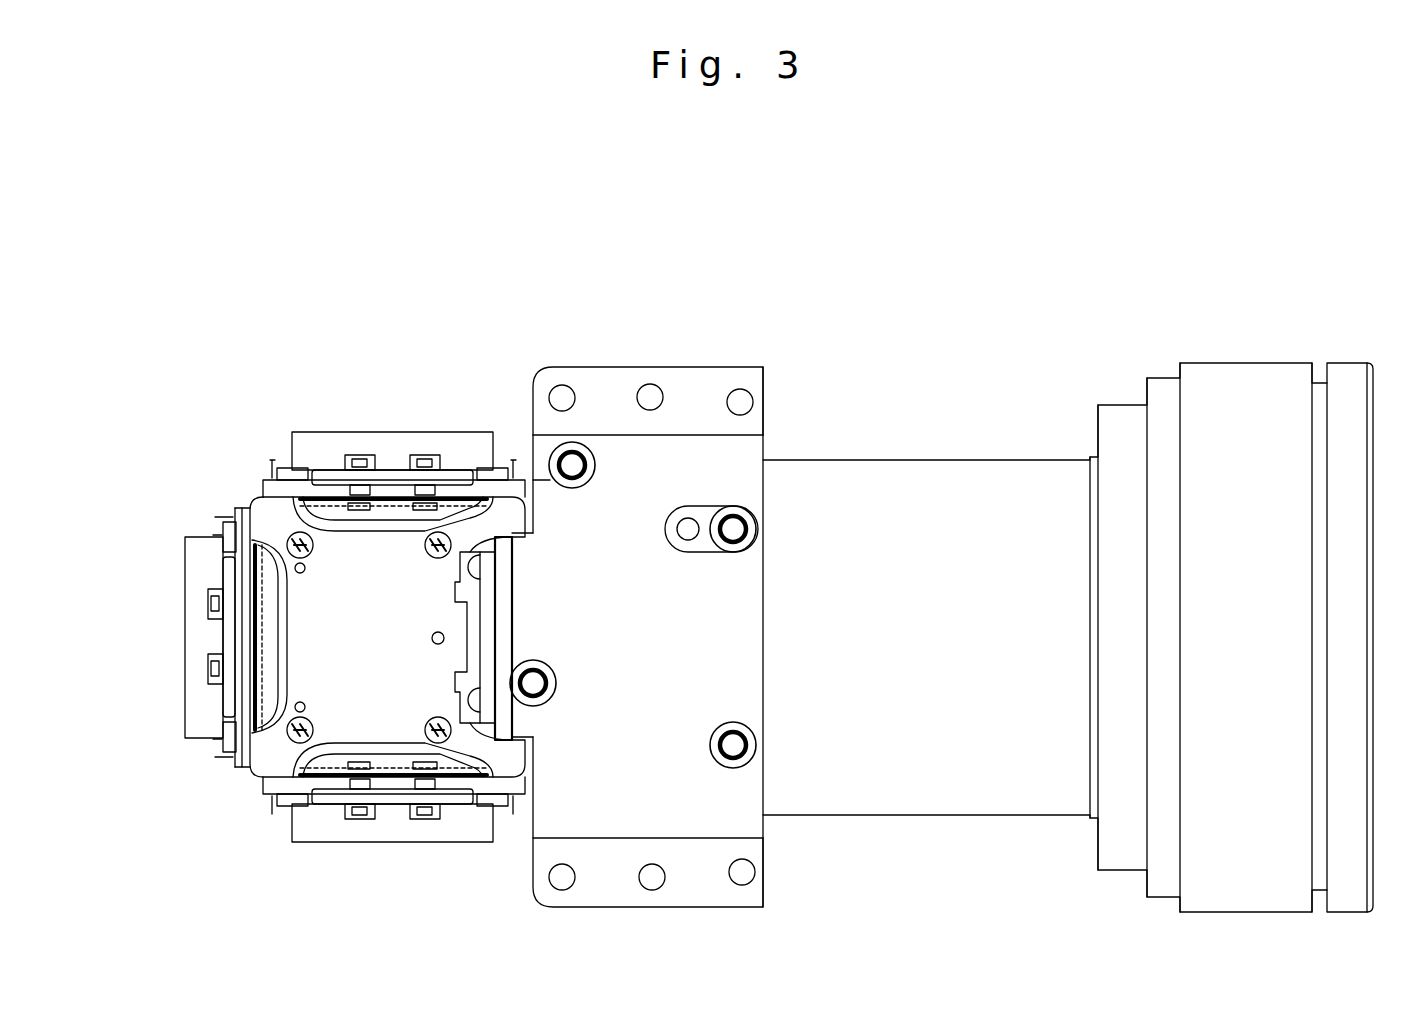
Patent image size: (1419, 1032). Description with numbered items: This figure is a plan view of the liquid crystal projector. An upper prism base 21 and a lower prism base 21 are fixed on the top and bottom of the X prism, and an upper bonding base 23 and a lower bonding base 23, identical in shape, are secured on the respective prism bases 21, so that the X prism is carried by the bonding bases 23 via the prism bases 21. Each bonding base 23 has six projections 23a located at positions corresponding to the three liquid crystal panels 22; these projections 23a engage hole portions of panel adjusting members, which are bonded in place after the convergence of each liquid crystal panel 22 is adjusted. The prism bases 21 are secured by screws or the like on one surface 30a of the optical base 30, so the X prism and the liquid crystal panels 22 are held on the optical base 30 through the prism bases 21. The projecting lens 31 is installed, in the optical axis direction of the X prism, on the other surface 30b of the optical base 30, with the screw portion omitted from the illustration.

The prism base 21 is at (342, 755).
The liquid crystal panel 22 is at (385, 440).
The bonding base 23 is at (262, 765).
The projection 23a is at (290, 466).
The optical base 30 is at (662, 457).
The one surface of optical base 30a is at (512, 562).
The other surface of optical base 30b is at (763, 697).
The projecting lens 31 is at (967, 483).